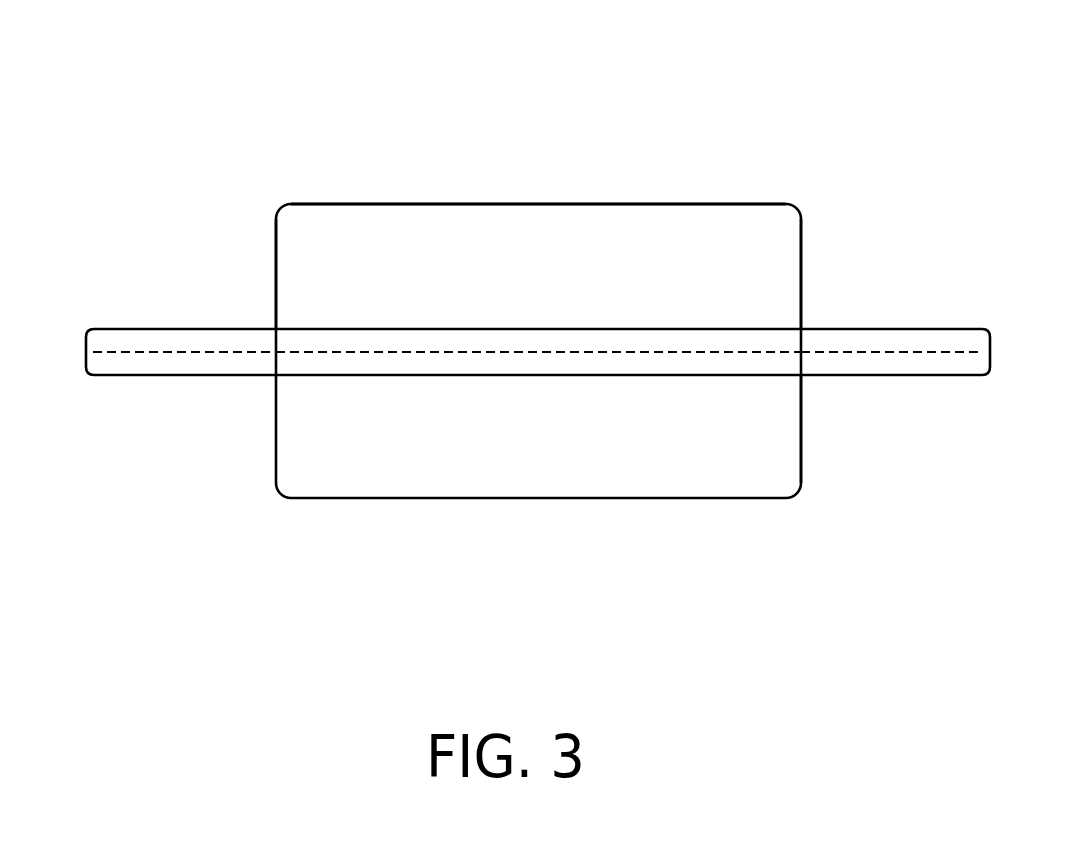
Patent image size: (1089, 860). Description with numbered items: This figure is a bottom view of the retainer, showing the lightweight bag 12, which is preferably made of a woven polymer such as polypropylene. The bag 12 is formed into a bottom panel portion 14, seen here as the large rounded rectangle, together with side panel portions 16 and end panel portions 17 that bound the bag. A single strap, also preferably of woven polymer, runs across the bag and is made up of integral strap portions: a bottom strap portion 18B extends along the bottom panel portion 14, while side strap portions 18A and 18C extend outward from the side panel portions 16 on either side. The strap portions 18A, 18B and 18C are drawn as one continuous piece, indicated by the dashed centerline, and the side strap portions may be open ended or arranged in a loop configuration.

The lightweight bag 12 is at (275, 213).
The bottom panel portion 14 is at (459, 237).
The side panel portion 16 is at (699, 202).
The end panel portion 17 is at (802, 460).
The side strap portion 18A is at (960, 367).
The bottom strap portion 18B is at (495, 375).
The side strap portion 18C is at (140, 375).